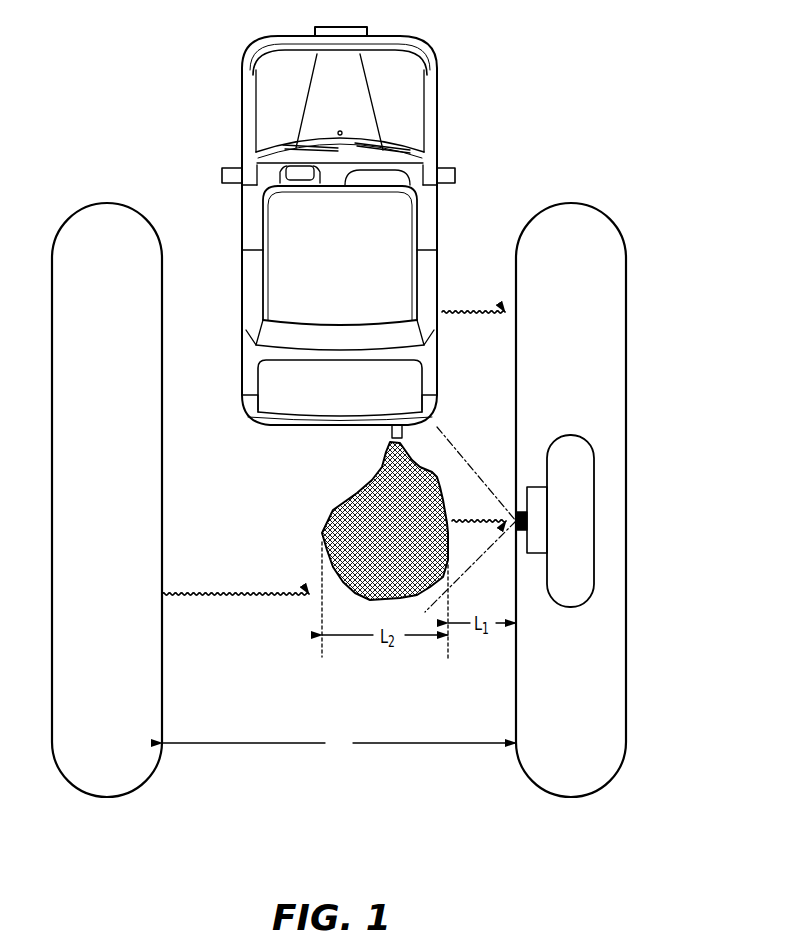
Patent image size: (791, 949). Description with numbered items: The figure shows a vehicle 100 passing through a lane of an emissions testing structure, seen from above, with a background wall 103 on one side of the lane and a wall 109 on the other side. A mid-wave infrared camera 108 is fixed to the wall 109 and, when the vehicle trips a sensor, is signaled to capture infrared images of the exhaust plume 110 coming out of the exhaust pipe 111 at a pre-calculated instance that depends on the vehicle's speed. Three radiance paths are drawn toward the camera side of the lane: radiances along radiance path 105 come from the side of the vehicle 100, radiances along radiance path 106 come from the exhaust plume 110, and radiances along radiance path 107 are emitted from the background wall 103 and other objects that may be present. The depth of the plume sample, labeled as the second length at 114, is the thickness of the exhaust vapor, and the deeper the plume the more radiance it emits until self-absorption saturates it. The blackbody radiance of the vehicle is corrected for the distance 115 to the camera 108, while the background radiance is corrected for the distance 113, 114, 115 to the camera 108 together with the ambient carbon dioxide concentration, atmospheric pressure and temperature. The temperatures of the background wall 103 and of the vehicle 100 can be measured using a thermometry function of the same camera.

The vehicle 100 is at (373, 232).
The background wall 103 is at (77, 842).
The radiance path 105 is at (462, 312).
The radiance path 106 is at (470, 521).
The radiance path 107 is at (232, 592).
The mid-wave infrared camera 108 is at (518, 510).
The wall 109 is at (600, 842).
The exhaust plume 110 is at (355, 500).
The exhaust pipe 111 is at (412, 431).
The distance 113 is at (418, 745).
The distance 114 is at (345, 636).
The distance 115 is at (468, 627).